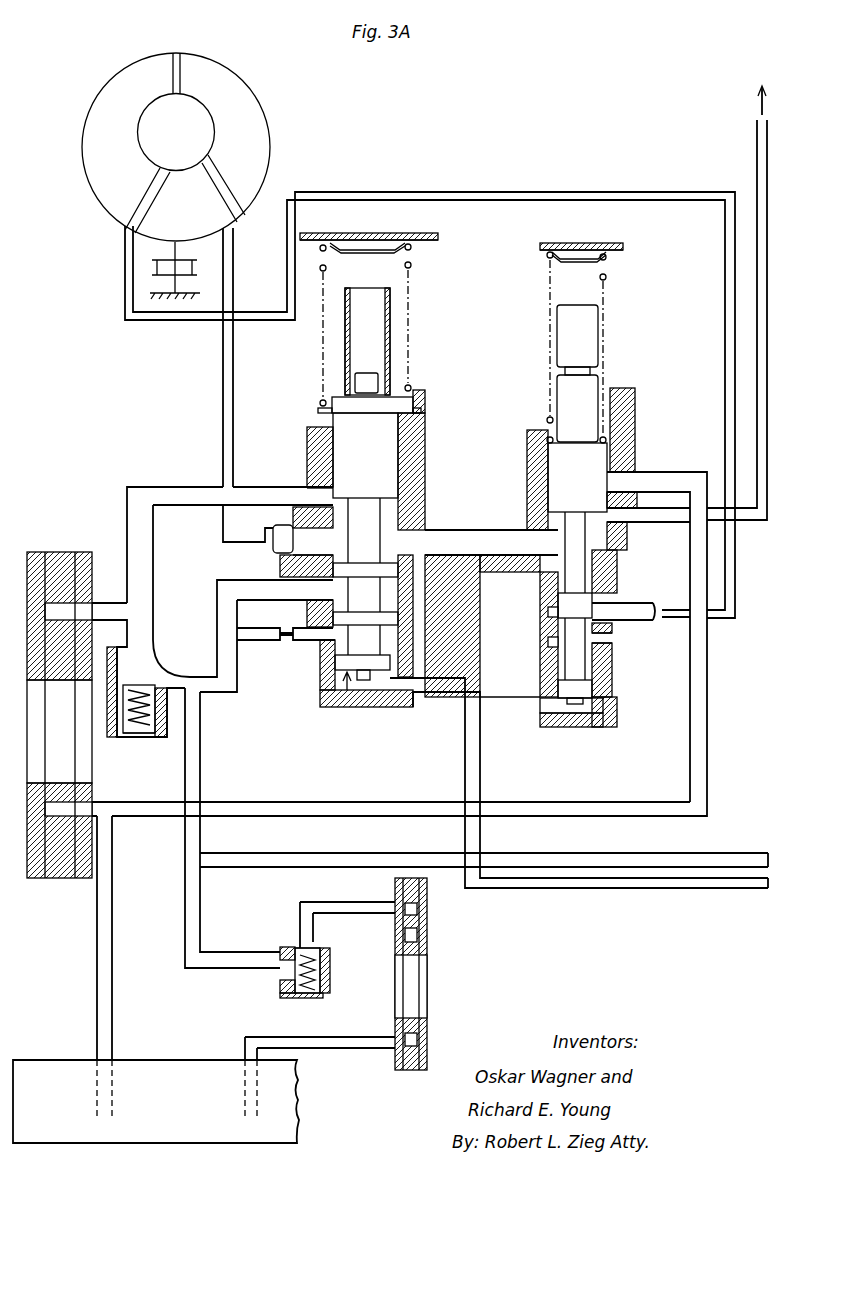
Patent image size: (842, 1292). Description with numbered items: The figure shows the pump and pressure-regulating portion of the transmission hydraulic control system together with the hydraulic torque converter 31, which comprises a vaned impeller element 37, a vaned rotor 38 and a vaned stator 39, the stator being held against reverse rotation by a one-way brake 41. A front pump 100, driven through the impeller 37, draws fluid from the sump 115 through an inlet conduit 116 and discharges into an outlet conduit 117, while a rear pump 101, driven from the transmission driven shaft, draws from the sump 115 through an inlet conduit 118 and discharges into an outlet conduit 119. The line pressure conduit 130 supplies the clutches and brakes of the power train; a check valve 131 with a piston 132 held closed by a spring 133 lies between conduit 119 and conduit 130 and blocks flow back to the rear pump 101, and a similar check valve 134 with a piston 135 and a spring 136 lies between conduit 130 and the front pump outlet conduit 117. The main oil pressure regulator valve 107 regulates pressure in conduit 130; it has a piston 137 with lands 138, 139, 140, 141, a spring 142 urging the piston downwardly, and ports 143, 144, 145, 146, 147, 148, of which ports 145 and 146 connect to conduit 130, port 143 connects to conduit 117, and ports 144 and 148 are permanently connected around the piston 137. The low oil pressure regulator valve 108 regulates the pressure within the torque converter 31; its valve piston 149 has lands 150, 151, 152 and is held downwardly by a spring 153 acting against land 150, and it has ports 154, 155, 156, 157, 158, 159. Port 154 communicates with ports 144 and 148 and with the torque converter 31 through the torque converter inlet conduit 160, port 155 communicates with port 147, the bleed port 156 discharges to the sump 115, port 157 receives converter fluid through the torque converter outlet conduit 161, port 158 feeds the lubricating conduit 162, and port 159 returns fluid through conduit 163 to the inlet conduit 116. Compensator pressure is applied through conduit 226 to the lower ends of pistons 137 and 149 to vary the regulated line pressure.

The hydraulic torque converter 31 is at (197, 43).
The impeller element 37 is at (223, 173).
The rotor 38 is at (132, 179).
The stator 39 is at (176, 210).
The one-way brake 41 is at (144, 271).
The front pump 100 is at (106, 681).
The rear pump 101 is at (439, 974).
The main oil pressure regulator valve 107 is at (427, 341).
The low oil pressure regulator valve 108 is at (638, 368).
The sump 115 is at (168, 1068).
The inlet conduit 116 is at (100, 943).
The outlet conduit 117 is at (142, 549).
The inlet conduit 118 is at (300, 1036).
The outlet conduit 119 is at (352, 902).
The line pressure conduit 130 is at (200, 896).
The check valve 131 is at (340, 963).
The piston 132 is at (315, 947).
The spring 133 is at (293, 982).
The check valve 134 is at (155, 754).
The piston 135 is at (144, 685).
The spring 136 is at (128, 725).
The piston 137 is at (347, 692).
The land 138 is at (369, 393).
The land 139 is at (400, 568).
The land 140 is at (393, 620).
The land 141 is at (390, 660).
The spring 142 is at (320, 401).
The port 143 is at (321, 497).
The port 144 is at (279, 527).
The port 145 is at (300, 590).
The port 146 is at (325, 638).
The port 147 is at (405, 683).
The port 148 is at (427, 543).
The valve piston 149 is at (588, 303).
The land 150 is at (577, 573).
The land 151 is at (547, 612).
The land 152 is at (557, 688).
The spring 153 is at (607, 259).
The port 154 is at (535, 543).
The port 155 is at (548, 714).
The bleed port 156 is at (607, 638).
The port 157 is at (607, 615).
The port 158 is at (617, 514).
The port 159 is at (617, 482).
The torque converter inlet conduit 160 is at (222, 414).
The torque converter outlet conduit 161 is at (328, 197).
The conduit 162 is at (762, 170).
The conduit 163 is at (627, 808).
The conduit 226 is at (705, 886).